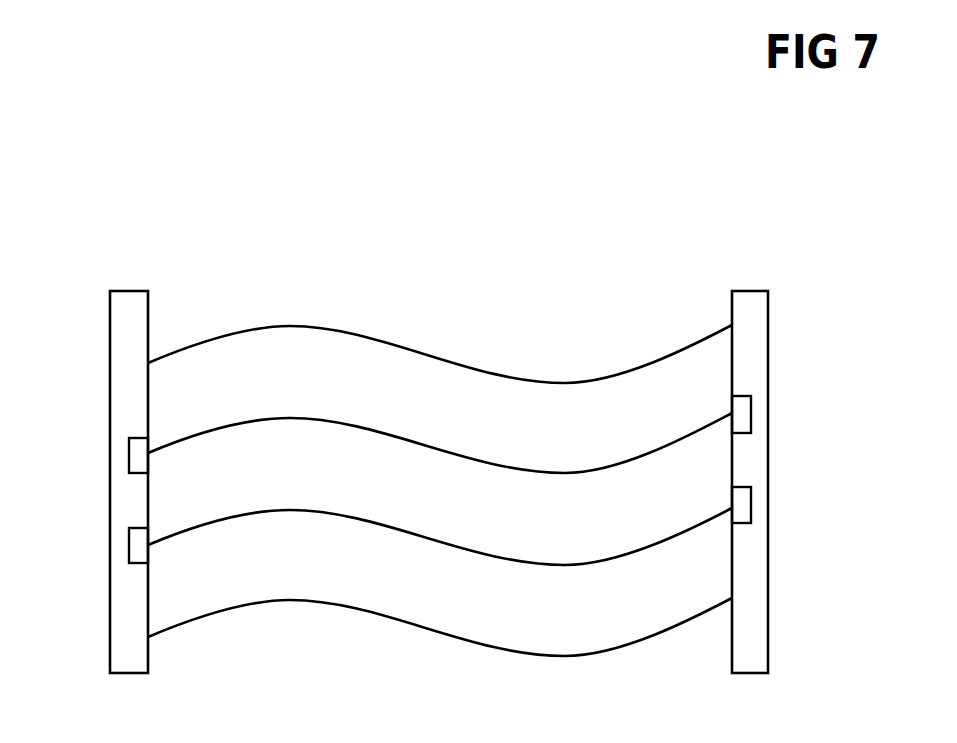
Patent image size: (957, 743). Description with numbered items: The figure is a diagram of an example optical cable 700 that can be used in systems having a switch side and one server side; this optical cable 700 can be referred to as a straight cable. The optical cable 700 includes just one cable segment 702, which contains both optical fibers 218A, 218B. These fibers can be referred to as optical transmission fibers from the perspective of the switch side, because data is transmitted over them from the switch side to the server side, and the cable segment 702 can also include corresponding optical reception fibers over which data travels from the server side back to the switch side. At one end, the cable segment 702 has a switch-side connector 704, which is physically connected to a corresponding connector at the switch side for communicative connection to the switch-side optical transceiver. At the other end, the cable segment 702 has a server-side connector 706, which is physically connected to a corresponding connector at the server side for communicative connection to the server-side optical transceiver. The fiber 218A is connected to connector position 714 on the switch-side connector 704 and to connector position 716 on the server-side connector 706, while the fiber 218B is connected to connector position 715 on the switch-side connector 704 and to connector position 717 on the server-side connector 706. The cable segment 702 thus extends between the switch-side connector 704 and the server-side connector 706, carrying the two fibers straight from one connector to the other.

The optical cable 700 is at (82, 176).
The cable segment 702 is at (356, 608).
The switch-side connector 704 is at (112, 340).
The server-side connector 706 is at (768, 321).
The connector position 714 is at (129, 454).
The connector position 715 is at (129, 552).
The connector position 716 is at (751, 411).
The connector position 717 is at (751, 500).
The optical fiber 218A is at (368, 430).
The optical fiber 218B is at (408, 532).